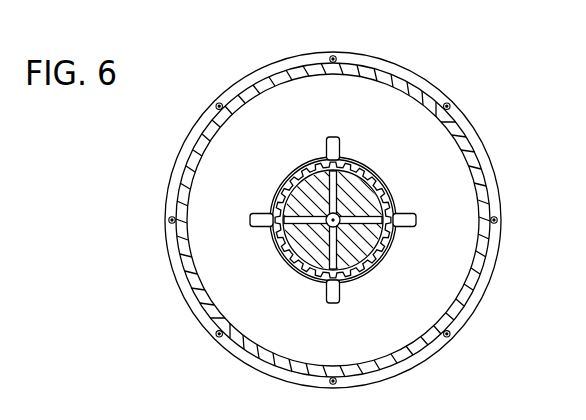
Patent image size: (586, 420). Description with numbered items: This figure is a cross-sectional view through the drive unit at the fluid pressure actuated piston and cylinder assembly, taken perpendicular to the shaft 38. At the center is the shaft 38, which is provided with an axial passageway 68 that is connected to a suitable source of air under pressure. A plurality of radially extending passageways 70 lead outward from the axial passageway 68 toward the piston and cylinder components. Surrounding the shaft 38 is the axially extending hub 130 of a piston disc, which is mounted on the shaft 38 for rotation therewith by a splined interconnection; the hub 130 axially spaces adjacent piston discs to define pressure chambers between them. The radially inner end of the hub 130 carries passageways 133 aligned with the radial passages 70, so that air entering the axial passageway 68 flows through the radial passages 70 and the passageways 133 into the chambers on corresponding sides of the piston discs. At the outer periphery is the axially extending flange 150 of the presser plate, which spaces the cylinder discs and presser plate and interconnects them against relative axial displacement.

The axially extending flange 150 is at (413, 90).
The axially extending hub 130 is at (364, 167).
The axial passageway 68 is at (340, 218).
The passageways 133 is at (334, 137).
The shaft 38 is at (367, 242).
The radial extending passageways 70 is at (323, 245).